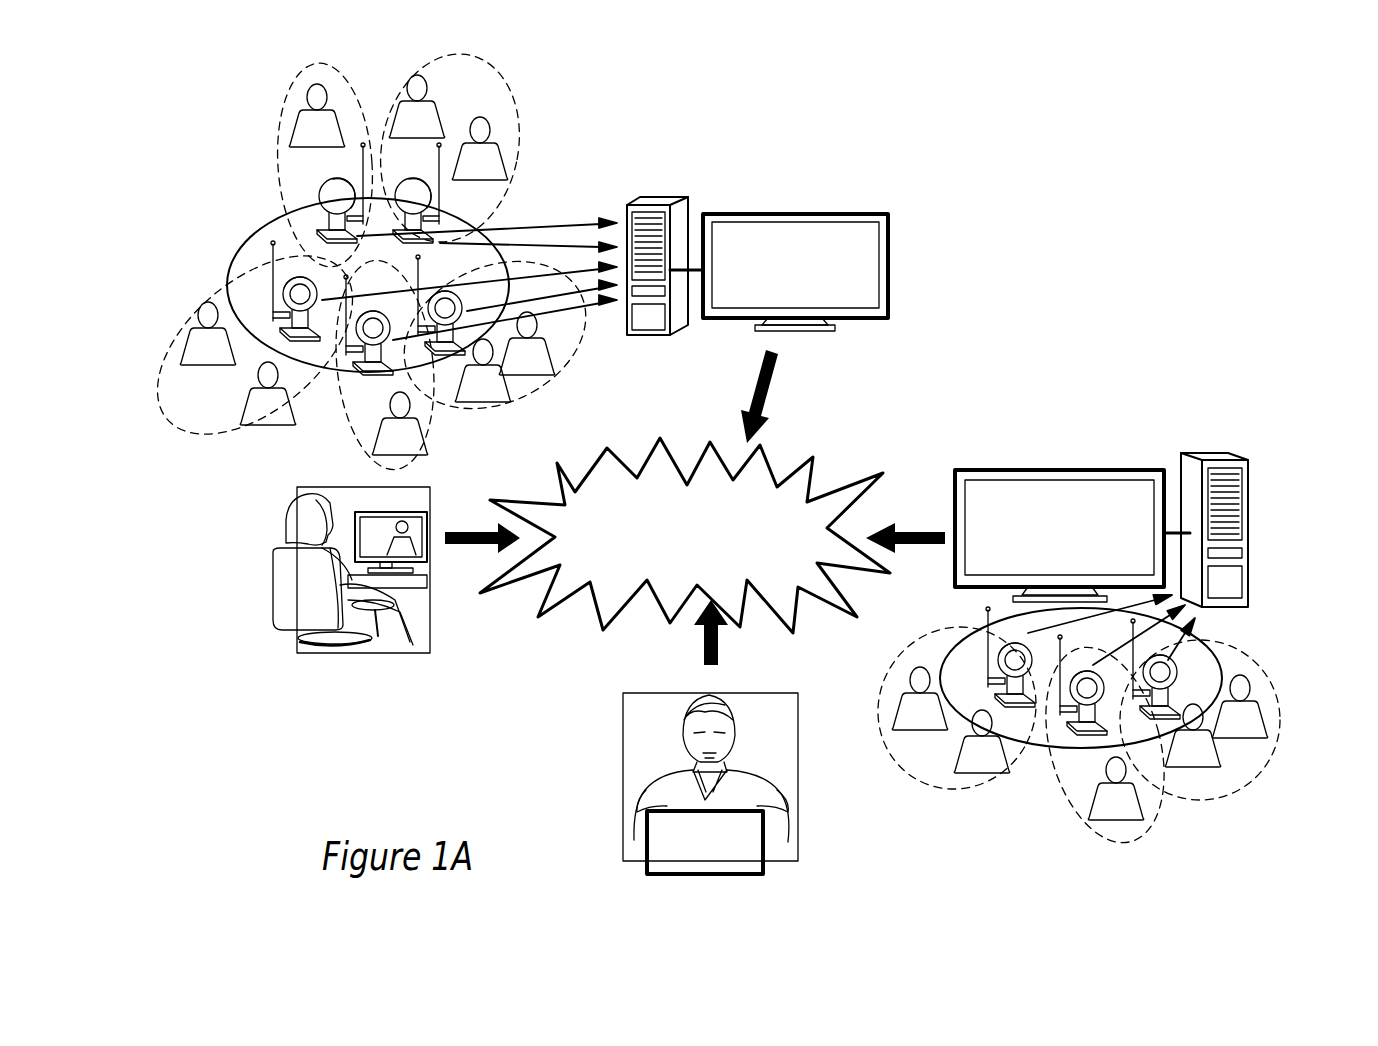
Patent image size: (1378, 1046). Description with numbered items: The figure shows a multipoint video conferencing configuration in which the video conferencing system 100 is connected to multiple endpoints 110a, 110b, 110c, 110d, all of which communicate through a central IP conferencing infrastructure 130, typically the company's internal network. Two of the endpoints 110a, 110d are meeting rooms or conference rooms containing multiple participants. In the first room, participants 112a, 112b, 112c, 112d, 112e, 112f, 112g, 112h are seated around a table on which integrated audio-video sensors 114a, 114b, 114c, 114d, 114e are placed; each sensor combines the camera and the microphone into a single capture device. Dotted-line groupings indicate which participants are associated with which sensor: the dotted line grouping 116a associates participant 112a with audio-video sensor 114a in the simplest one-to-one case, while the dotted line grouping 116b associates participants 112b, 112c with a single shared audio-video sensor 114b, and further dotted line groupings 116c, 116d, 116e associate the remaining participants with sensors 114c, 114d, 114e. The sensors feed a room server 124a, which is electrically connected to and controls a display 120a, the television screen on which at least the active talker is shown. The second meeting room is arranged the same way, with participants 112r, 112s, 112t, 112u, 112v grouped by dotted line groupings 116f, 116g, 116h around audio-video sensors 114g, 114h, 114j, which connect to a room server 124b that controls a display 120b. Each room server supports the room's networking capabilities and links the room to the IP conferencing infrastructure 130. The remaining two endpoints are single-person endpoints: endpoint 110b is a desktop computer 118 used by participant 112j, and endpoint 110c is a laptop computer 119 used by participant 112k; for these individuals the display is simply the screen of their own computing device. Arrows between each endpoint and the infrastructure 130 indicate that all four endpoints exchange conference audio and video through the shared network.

The video conferencing system 100 is at (1090, 105).
The endpoint 110a is at (657, 106).
The endpoint 110b is at (245, 523).
The endpoint 110c is at (602, 694).
The endpoint 110d is at (1222, 413).
The participant 112a is at (293, 130).
The participant 112b is at (436, 120).
The participant 112c is at (506, 162).
The participant 112d is at (555, 350).
The participant 112e is at (470, 405).
The participant 112f is at (372, 448).
The participant 112g is at (242, 402).
The participant 112h is at (183, 348).
The participant 112j is at (320, 652).
The participant 112k is at (625, 762).
The participant 112r is at (895, 712).
The participant 112s is at (958, 780).
The participant 112t is at (1100, 800).
The participant 112u is at (1215, 762).
The participant 112v is at (1250, 712).
The audio-video sensor 114a is at (318, 195).
The audio-video sensor 114b is at (440, 194).
The audio-video sensor 114c is at (470, 285).
The audio-video sensor 114d is at (360, 355).
The audio-video sensor 114e is at (280, 286).
The audio-video sensor 114g is at (985, 655).
The audio-video sensor 114h is at (1078, 666).
The audio-video sensor 114j is at (1175, 660).
The dotted line grouping 116a is at (326, 76).
The dotted line grouping 116b is at (450, 60).
The dotted line grouping 116c is at (530, 412).
The dotted line grouping 116d is at (430, 448).
The dotted line grouping 116e is at (178, 300).
The dotted line grouping 116f is at (880, 688).
The dotted line grouping 116g is at (1150, 822).
The dotted line grouping 116h is at (1268, 672).
The desktop computer 118 is at (420, 550).
The laptop computer 119 is at (765, 868).
The display 120a is at (832, 214).
The display 120b is at (1066, 470).
The room server 124a is at (688, 200).
The room server 124b is at (1248, 522).
The IP conferencing infrastructure 130 is at (686, 576).